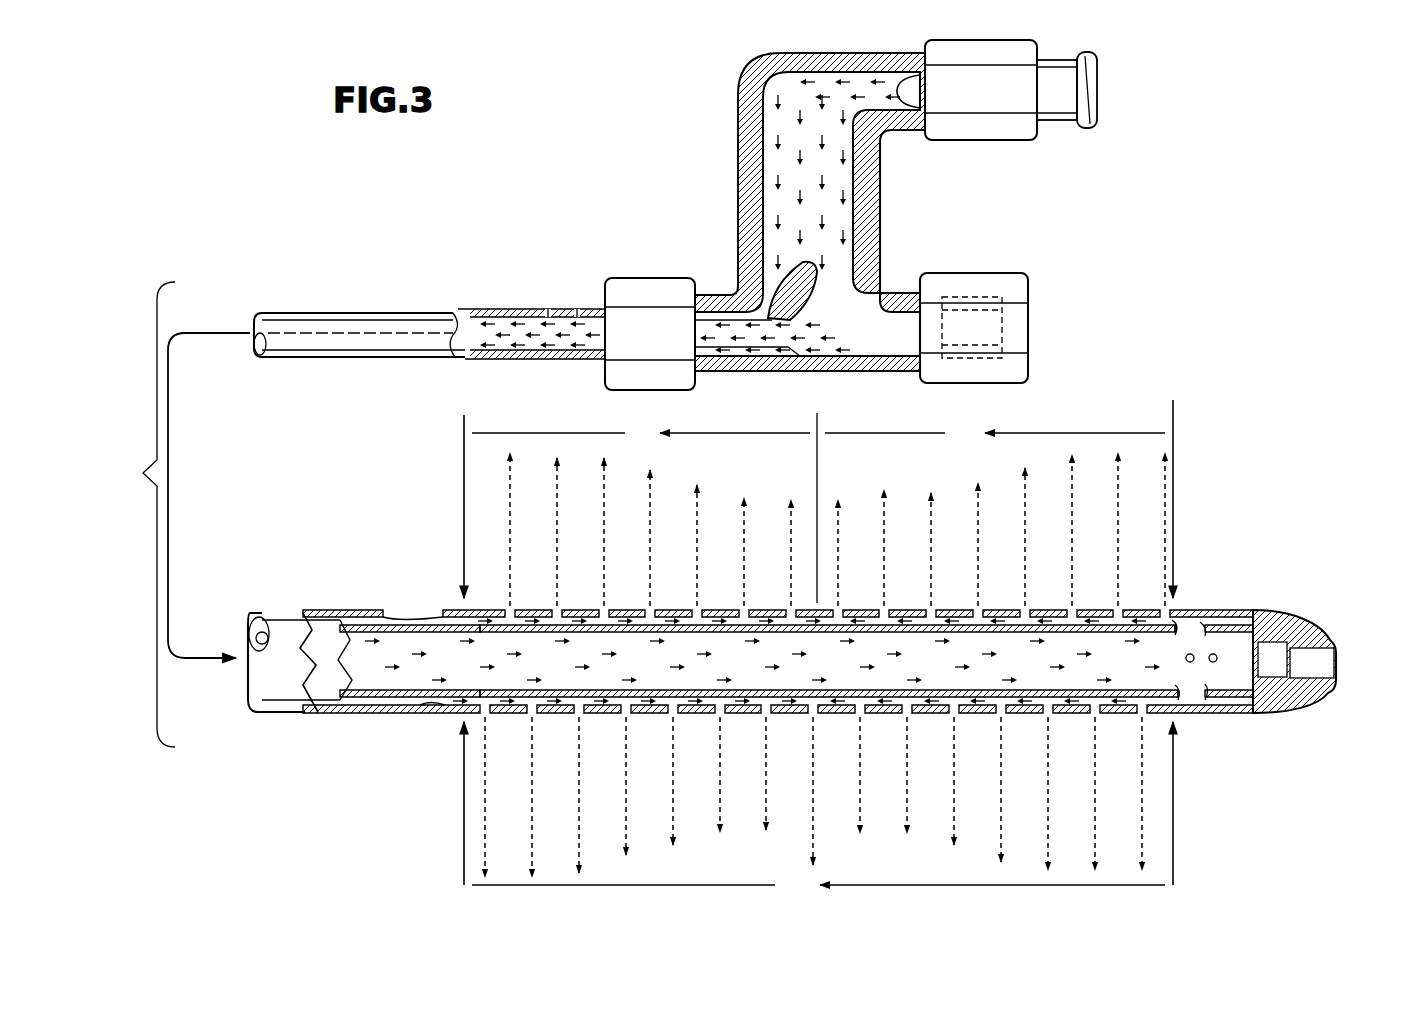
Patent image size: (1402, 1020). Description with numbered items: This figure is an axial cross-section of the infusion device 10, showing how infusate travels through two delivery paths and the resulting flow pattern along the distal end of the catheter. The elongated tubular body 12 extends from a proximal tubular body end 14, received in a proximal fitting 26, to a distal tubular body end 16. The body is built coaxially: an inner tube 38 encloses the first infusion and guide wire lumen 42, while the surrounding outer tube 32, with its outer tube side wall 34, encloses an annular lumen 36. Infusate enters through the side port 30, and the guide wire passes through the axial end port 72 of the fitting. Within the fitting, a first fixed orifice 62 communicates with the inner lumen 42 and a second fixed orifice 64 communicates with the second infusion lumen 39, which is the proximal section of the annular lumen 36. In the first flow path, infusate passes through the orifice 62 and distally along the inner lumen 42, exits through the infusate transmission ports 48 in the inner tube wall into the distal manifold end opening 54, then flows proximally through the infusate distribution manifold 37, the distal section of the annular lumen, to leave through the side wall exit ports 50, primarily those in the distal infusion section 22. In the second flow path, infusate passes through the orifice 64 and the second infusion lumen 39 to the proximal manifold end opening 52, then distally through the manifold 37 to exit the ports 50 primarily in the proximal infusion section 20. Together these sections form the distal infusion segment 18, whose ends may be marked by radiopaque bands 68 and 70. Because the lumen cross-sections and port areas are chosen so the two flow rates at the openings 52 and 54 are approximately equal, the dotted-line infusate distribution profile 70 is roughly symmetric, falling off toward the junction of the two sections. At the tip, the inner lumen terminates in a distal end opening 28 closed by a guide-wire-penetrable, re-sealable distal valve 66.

The infusion device 10 is at (406, 252).
The elongated tubular body 12 is at (290, 358).
The proximal tubular body end 14 is at (512, 300).
The distal tubular body end 16 is at (1286, 639).
The distal infusion segment 18 is at (818, 886).
The proximal infusion section 20 is at (644, 508).
The distal infusion section 22 is at (995, 434).
The proximal fitting 26 is at (808, 212).
The distal end opening 28 is at (1335, 668).
The side port 30 is at (972, 138).
The outer tube 32 is at (313, 612).
The outer tube side wall 34 is at (458, 612).
The annular lumen 36 is at (255, 625).
The infusate distribution manifold 37 is at (1150, 625).
The inner tube 38 is at (386, 697).
The second infusion lumen 39 is at (548, 318).
The first infusion and guide wire lumen 42 is at (470, 335).
The infusate transmission ports 48 is at (1183, 628).
The side wall exit ports 50 is at (650, 610).
The proximal manifold end opening 52 is at (464, 556).
The distal manifold end opening 54 is at (1173, 572).
The first fixed orifice 62 is at (745, 330).
The second fixed orifice 64 is at (770, 290).
The distal valve 66 is at (1330, 652).
The radiopaque band 68 is at (460, 605).
The infusate distribution profile 70 is at (922, 478).
The axial end port 72 is at (1000, 338).